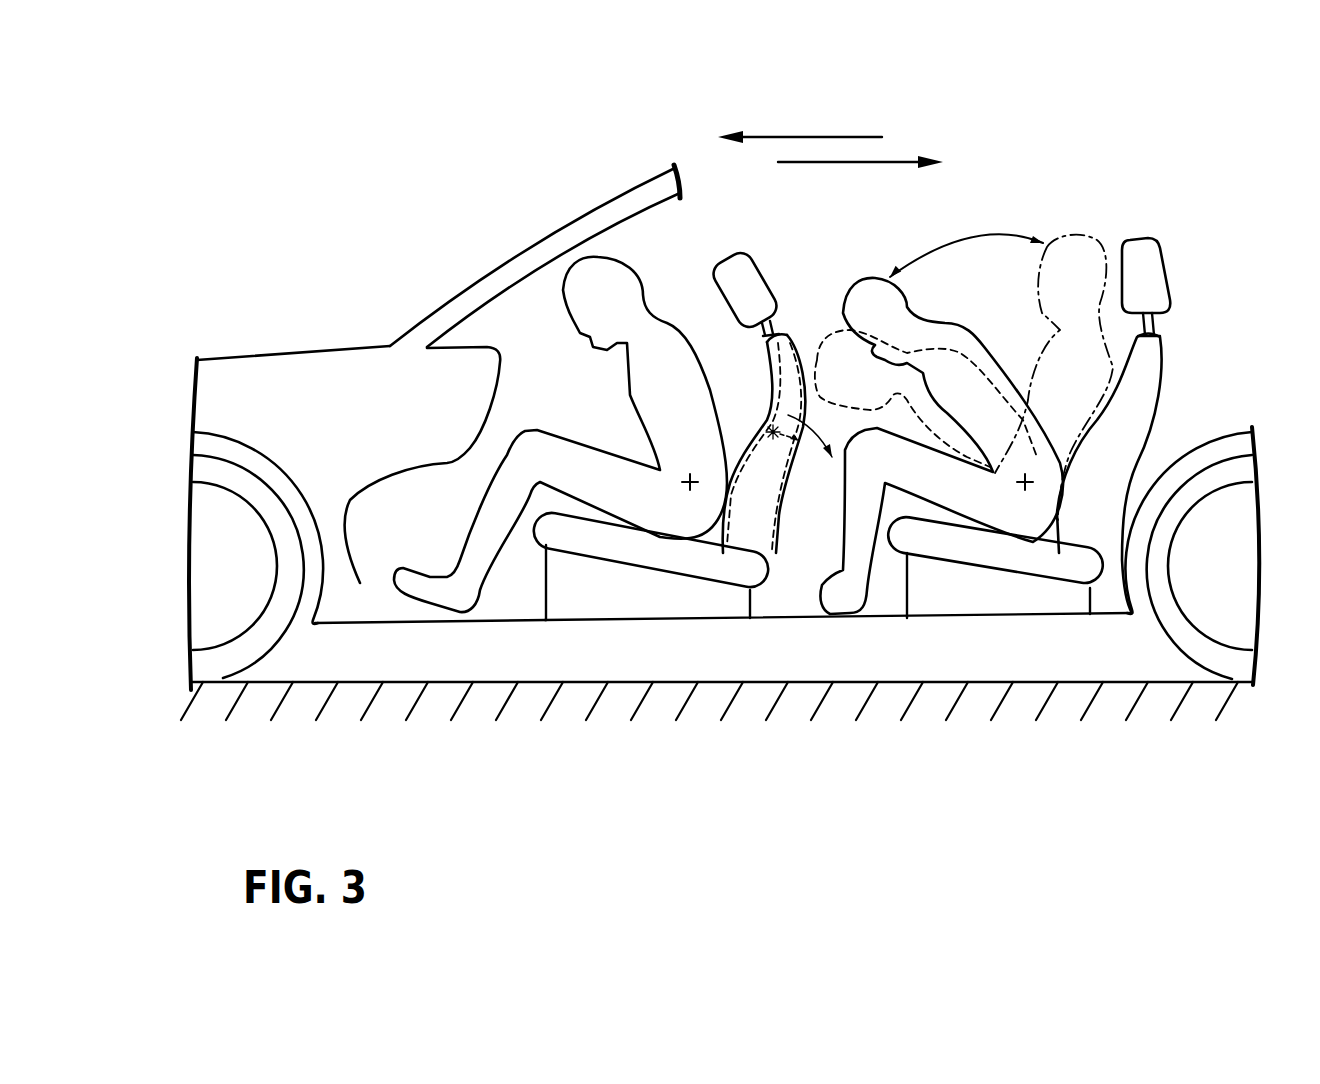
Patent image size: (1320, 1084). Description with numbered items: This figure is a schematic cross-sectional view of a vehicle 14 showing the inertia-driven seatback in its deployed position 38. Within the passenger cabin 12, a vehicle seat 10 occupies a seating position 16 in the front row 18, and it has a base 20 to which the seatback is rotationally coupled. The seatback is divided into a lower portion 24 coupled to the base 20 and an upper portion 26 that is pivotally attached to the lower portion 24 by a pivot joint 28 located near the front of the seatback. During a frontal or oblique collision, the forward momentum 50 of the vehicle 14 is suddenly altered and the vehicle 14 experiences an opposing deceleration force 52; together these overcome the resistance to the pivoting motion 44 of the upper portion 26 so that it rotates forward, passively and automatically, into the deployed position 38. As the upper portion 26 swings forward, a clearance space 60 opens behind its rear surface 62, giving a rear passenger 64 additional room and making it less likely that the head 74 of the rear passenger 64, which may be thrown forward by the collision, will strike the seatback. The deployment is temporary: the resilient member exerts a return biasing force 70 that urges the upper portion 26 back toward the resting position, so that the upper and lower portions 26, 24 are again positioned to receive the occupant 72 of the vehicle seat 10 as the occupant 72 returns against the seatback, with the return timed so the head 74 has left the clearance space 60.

The vehicle seat 10 is at (637, 600).
The passenger cabin 12 is at (503, 327).
The vehicle 14 is at (172, 448).
The seating position 16 is at (715, 622).
The front row 18 is at (700, 187).
The base 20 is at (590, 543).
The lower portion 24 is at (750, 513).
The upper portion 26 is at (790, 400).
The pivot joint 28 is at (773, 432).
The deployed position 38 is at (767, 250).
The pivoting motion 44 is at (725, 357).
The forward momentum 50 is at (780, 137).
The deceleration force 52 is at (893, 162).
The clearance space 60 is at (797, 315).
The rear surface 62 is at (807, 357).
The rear passenger 64 is at (980, 353).
The return biasing force 70 is at (812, 433).
The occupant 72 is at (663, 360).
The head 74 is at (873, 297).